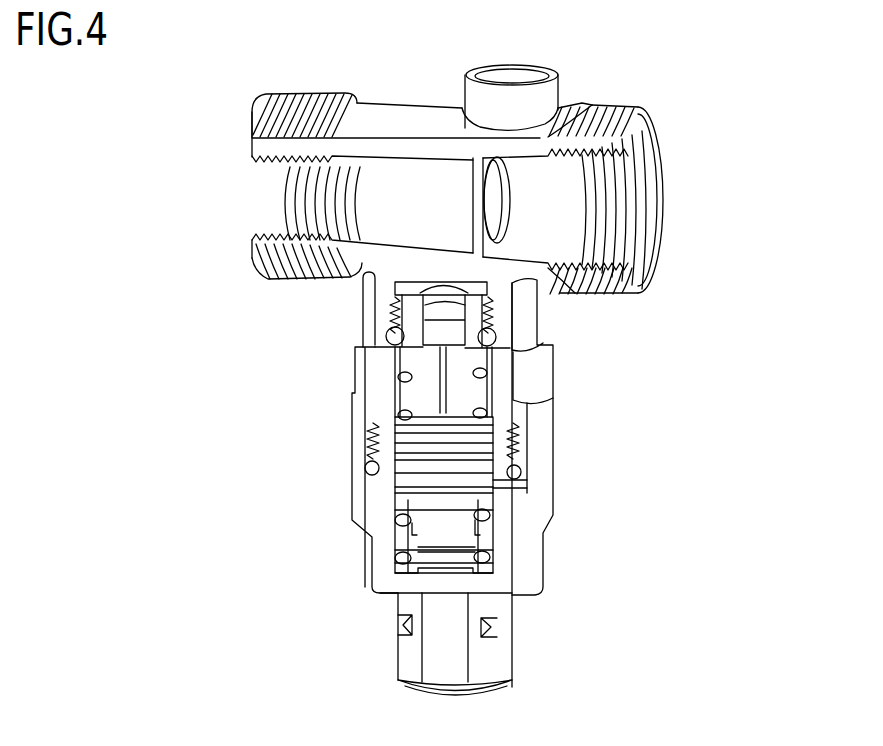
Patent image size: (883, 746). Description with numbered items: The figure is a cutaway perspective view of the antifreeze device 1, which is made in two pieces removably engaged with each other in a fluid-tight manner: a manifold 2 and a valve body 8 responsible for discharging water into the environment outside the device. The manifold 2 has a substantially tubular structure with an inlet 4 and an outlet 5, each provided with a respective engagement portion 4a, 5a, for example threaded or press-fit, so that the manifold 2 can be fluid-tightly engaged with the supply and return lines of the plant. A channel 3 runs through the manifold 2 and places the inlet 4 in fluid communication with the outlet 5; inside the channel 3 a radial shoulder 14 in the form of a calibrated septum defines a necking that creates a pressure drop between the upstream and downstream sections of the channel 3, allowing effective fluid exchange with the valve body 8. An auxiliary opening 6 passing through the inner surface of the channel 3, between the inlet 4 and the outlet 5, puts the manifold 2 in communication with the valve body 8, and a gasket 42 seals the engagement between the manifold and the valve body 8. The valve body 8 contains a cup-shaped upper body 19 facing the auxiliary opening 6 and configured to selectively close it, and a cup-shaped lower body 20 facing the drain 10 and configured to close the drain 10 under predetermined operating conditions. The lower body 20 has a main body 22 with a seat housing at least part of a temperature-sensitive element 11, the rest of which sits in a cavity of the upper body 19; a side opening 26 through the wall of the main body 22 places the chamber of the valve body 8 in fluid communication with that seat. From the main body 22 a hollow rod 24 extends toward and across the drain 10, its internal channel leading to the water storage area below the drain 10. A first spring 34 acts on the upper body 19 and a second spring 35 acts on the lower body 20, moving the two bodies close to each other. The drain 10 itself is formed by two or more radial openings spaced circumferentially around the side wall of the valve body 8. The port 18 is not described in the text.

The antifreeze device 1 is at (767, 67).
The manifold 2 is at (427, 103).
The channel 3 is at (385, 185).
The inlet 4 is at (248, 120).
The engagement portion 4a is at (293, 218).
The outlet 5 is at (653, 267).
The engagement portion 5a is at (630, 110).
The auxiliary opening 6 is at (447, 288).
The valve body 8 is at (350, 362).
The drain 10 is at (387, 625).
The temperature-sensitive element 11 is at (509, 520).
The shoulder 14 is at (510, 213).
The connection port 18 is at (567, 83).
The upper body 19 is at (420, 389).
The lower body 20 is at (406, 479).
The main body 22 is at (483, 540).
The hollow rod 24 is at (493, 623).
The side opening 26 is at (407, 532).
The first spring 34 is at (480, 412).
The second spring 35 is at (518, 490).
The gasket 42 is at (490, 338).